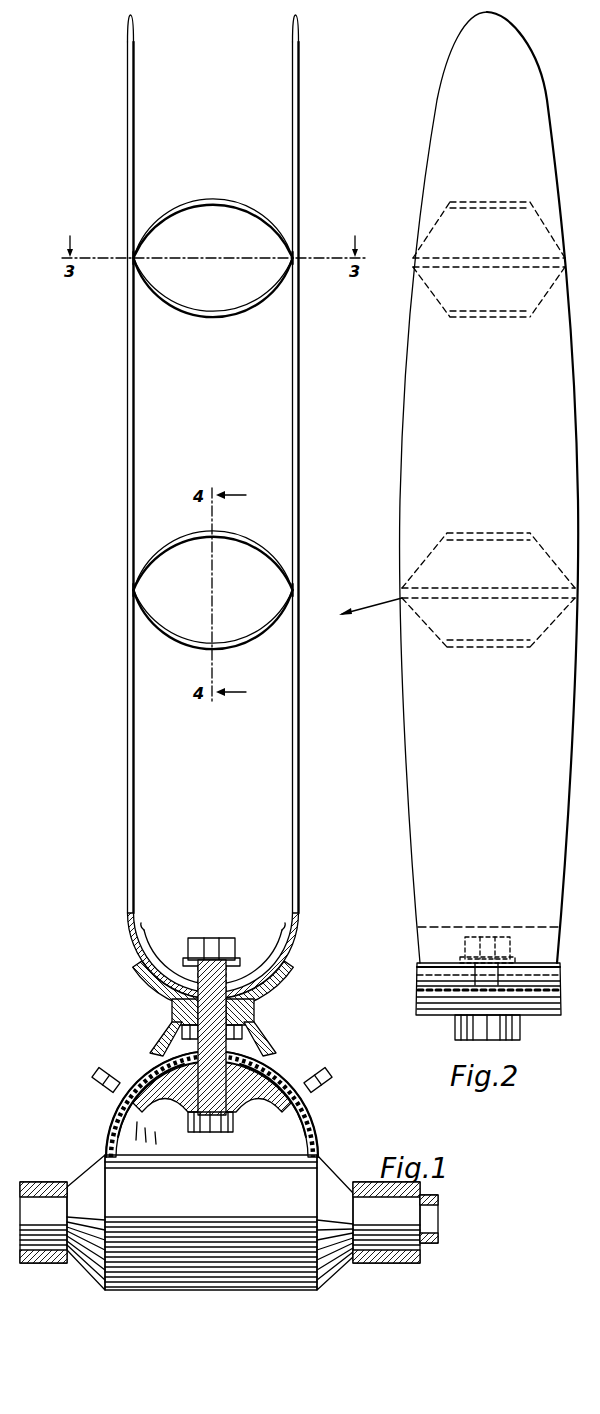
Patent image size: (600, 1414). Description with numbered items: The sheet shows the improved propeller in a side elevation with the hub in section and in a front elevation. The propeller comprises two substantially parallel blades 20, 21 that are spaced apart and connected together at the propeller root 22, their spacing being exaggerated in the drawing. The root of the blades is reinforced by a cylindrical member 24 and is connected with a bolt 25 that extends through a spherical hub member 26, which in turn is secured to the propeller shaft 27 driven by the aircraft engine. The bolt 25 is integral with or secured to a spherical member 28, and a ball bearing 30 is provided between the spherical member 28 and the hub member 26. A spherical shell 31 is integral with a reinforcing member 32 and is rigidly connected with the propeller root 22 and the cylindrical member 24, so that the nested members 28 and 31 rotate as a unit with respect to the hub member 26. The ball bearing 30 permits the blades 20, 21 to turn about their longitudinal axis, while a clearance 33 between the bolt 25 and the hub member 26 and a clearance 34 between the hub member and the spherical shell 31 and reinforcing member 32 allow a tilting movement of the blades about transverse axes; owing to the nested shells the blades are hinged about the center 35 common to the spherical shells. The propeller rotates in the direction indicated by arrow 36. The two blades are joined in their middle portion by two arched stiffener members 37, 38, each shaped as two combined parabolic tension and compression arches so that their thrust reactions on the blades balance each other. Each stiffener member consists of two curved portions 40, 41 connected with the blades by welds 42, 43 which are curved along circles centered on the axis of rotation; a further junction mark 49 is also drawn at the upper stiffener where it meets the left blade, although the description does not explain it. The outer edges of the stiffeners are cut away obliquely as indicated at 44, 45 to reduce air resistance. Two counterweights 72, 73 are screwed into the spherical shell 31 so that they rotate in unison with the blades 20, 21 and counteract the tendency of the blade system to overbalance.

In FIG. 1, the blade 20 is at (134, 108).
In FIG. 1, the blade 21 is at (299, 127).
In FIG. 2, the blade 21 is at (532, 68).
In FIG. 1, the propeller root 22 is at (261, 997).
In FIG. 1, the cylindrical member 24 is at (151, 955).
In FIG. 2, the cylindrical member 24 is at (526, 930).
In FIG. 1, the bolt 25 is at (185, 1113).
In FIG. 1, the spherical hub member 26 is at (309, 1124).
In FIG. 1, the propeller shaft 27 is at (430, 1240).
In FIG. 1, the spherical member 28 is at (289, 1071).
In FIG. 1, the ball bearing 30 is at (152, 1061).
In FIG. 1, the spherical shell 31 is at (158, 1048).
In FIG. 1, the reinforcing member 32 is at (143, 983).
In FIG. 1, the clearance 33 is at (183, 1031).
In FIG. 1, the clearance 34 is at (246, 1034).
In FIG. 1, the center 35 is at (226, 1133).
In FIG. 2, the arrow 36 is at (370, 618).
In FIG. 1, the arched stiffener member 37 is at (154, 204).
In FIG. 1, the arched stiffener member 38 is at (155, 543).
In FIG. 1, the curved portion 40 is at (231, 201).
In FIG. 1, the curved portion 41 is at (216, 322).
In FIG. 1, the weld 42 is at (134, 592).
In FIG. 1, the weld 43 is at (290, 262).
In FIG. 2, the weld 43 is at (488, 258).
In FIG. 2, the cut-away outer edge 44 is at (431, 228).
In FIG. 2, the cut-away outer edge 45 is at (430, 298).
In FIG. 1, the strap junction 49 is at (135, 267).
In FIG. 1, the counterweight 72 is at (324, 1078).
In FIG. 1, the counterweight 73 is at (99, 1079).